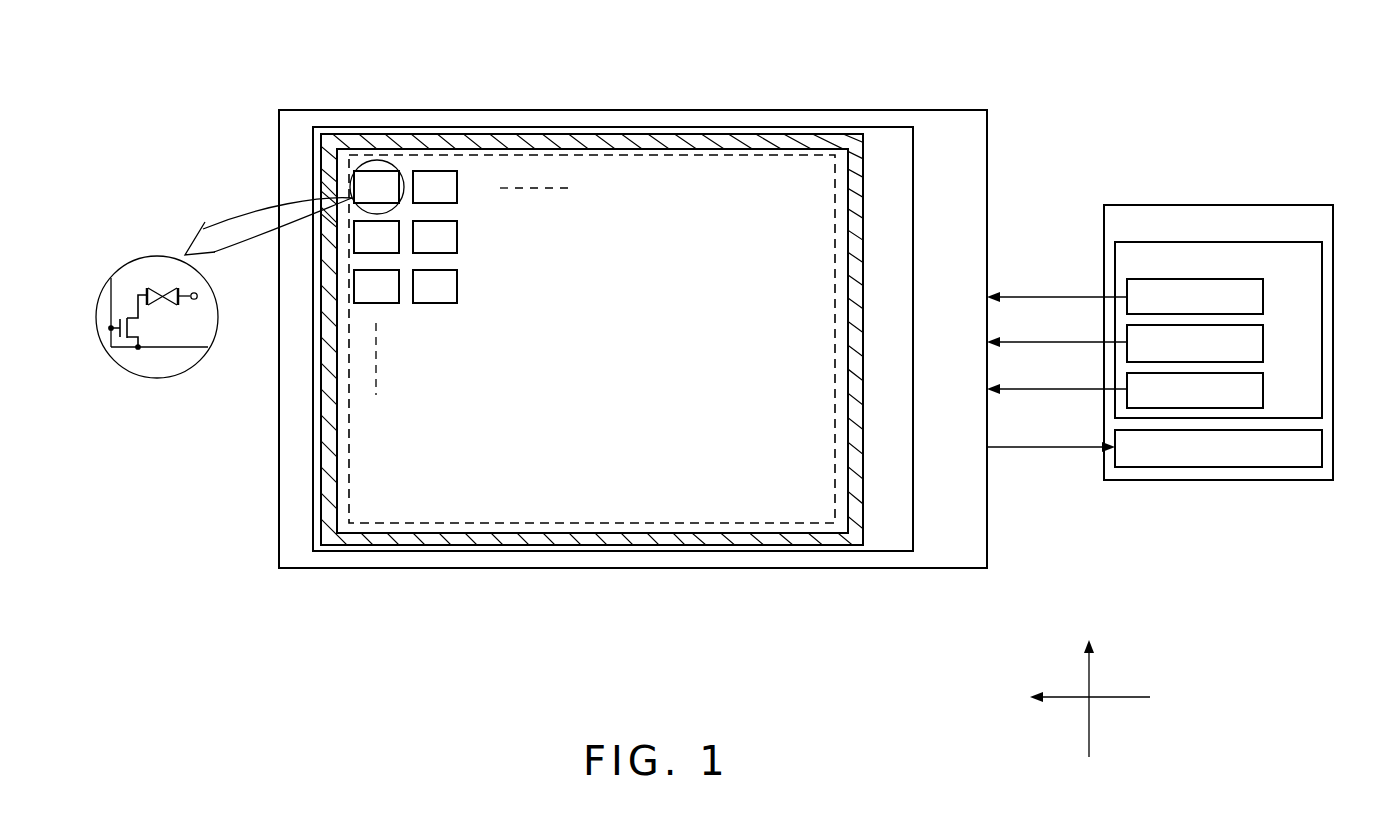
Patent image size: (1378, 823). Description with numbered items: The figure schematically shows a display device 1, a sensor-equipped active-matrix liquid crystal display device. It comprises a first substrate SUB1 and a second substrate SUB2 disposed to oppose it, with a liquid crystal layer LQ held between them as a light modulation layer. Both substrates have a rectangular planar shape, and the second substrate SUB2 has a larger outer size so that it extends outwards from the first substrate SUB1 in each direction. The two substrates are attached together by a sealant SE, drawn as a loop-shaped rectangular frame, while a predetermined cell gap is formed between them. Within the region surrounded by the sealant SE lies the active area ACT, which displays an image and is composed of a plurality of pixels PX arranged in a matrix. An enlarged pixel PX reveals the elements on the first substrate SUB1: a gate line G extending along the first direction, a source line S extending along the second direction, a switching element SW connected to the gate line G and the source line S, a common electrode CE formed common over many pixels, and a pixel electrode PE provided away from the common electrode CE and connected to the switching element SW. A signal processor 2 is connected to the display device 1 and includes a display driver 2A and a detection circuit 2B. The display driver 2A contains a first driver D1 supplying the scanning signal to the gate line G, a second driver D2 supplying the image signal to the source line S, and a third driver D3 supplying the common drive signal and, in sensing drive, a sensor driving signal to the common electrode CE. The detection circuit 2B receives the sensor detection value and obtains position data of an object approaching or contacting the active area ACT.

The display device 1 is at (980, 89).
The signal processor 2 is at (1208, 205).
The display driver 2A is at (1333, 325).
The detection circuit 2B is at (1322, 450).
The first driver D1 is at (1263, 297).
The second driver D2 is at (1263, 344).
The third driver D3 is at (1263, 390).
The first substrate SUB1 is at (512, 551).
The second substrate SUB2 is at (603, 568).
The sealant SE is at (665, 134).
The active area ACT is at (687, 545).
The pixel PX is at (380, 165).
The pixel electrode PE is at (140, 288).
The liquid crystal layer LQ is at (163, 288).
The common electrode CE is at (198, 298).
The switching element SW is at (152, 325).
The gate line G is at (111, 300).
The source line S is at (177, 348).